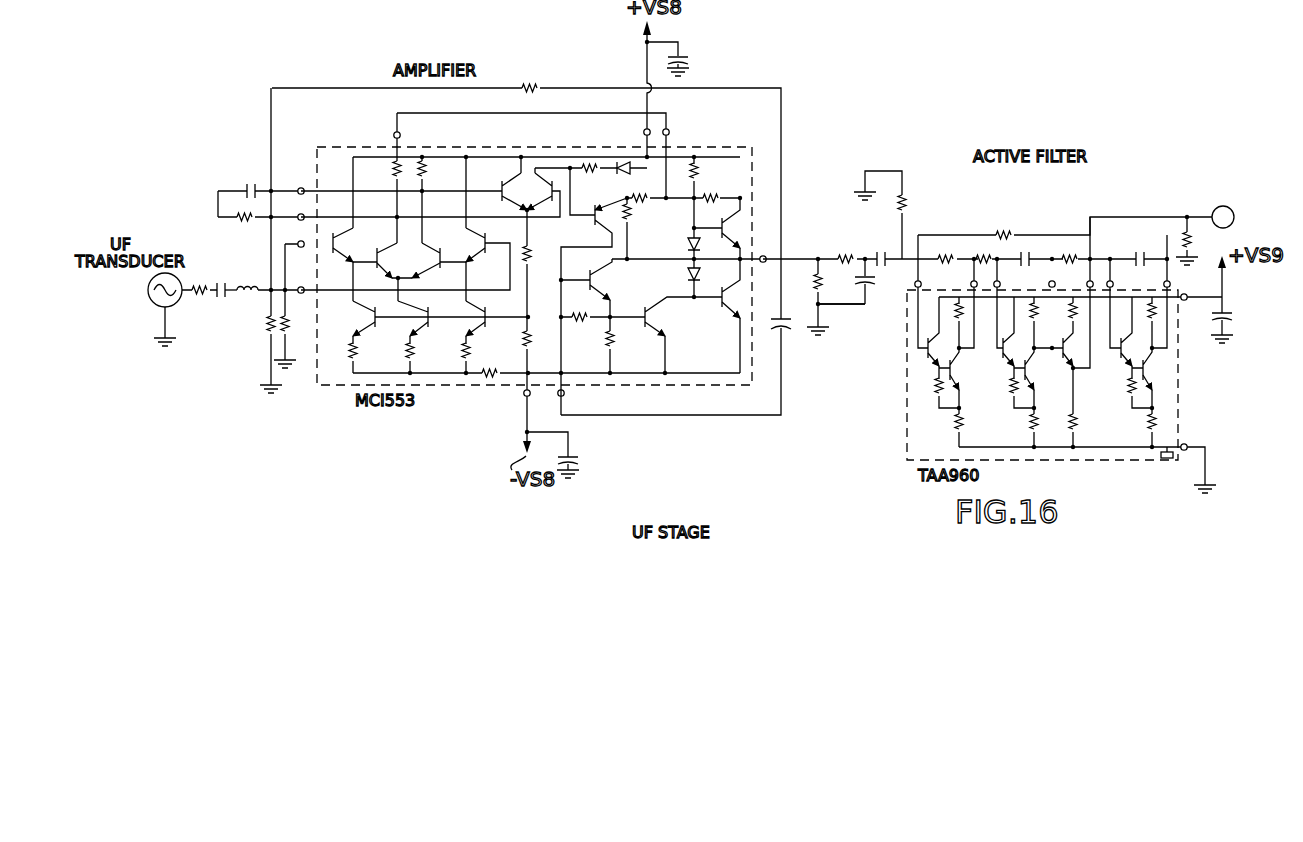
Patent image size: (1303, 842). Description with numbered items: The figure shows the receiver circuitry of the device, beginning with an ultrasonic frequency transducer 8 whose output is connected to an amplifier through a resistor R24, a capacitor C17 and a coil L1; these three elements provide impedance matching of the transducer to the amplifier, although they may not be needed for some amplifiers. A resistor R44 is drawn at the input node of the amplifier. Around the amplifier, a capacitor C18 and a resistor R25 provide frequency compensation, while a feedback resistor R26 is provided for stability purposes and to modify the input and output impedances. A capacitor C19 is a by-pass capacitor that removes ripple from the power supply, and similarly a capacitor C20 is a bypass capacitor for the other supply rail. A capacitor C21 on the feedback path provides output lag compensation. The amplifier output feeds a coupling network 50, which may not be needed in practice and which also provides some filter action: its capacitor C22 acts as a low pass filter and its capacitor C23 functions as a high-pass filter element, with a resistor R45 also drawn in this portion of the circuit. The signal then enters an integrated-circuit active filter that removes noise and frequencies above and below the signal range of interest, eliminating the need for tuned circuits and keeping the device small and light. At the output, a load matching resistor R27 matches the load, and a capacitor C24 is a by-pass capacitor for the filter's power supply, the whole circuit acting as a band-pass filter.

The ultrasonic frequency transducer 8 is at (148, 295).
The capacitor C17 is at (215, 280).
The coil L1 is at (254, 276).
The resistor R24 is at (199, 297).
The resistor R44 is at (268, 330).
The capacitor C18 is at (250, 186).
The resistor R25 is at (246, 226).
The feedback resistor R26 is at (542, 88).
The by-pass capacitor C19 is at (687, 57).
The bypass capacitor C20 is at (576, 458).
The capacitor C21 is at (770, 323).
The capacitor C22 is at (872, 281).
The capacitor C23 is at (877, 253).
The resistor R45 is at (906, 204).
The coupling network 50 is at (856, 312).
The load matching resistor R27 is at (1202, 241).
The by-pass capacitor C24 is at (1234, 315).